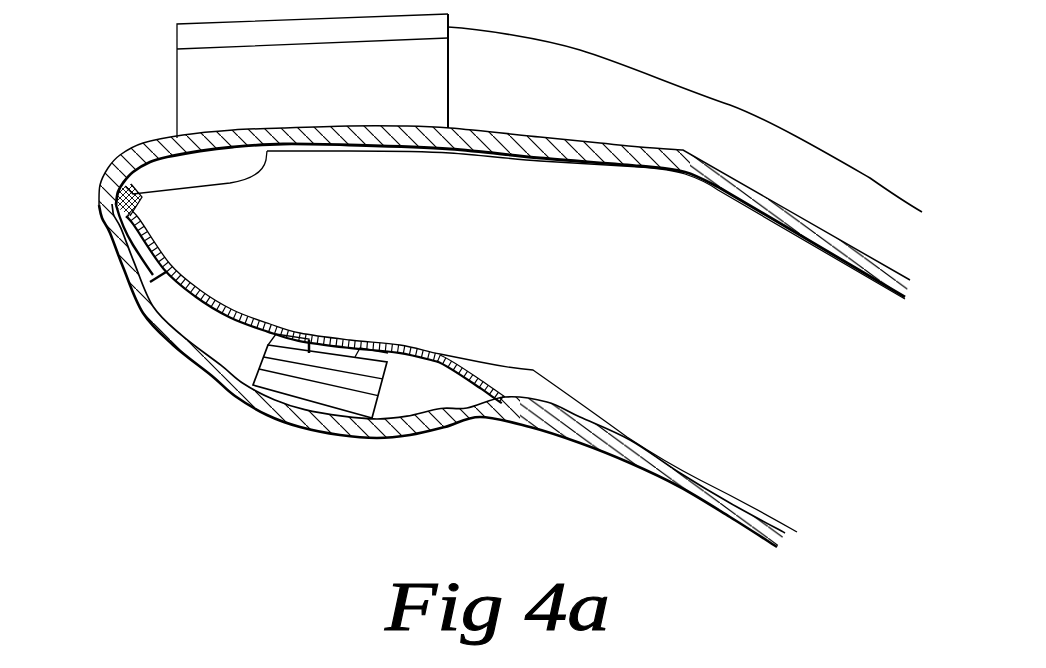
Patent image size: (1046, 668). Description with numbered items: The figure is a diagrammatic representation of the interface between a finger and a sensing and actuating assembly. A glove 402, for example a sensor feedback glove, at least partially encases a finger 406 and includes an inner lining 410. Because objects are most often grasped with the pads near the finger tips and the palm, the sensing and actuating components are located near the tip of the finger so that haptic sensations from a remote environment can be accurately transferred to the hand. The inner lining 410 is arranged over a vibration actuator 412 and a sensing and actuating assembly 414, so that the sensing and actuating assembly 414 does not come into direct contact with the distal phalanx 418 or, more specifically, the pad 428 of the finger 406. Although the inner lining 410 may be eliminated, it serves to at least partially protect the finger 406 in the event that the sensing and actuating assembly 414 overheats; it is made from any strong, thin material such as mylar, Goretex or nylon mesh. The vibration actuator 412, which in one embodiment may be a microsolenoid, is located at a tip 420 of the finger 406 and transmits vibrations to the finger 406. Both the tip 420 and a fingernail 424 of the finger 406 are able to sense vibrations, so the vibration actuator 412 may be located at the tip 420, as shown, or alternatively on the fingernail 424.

The glove 402 is at (100, 210).
The finger 406 is at (703, 318).
The inner lining 410 is at (468, 390).
The vibration actuator 412 is at (145, 263).
The sensing and actuating assembly 414 is at (303, 377).
The distal phalanx 418 is at (467, 182).
The tip 420 is at (117, 202).
The fingernail 424 is at (173, 178).
The pad 428 is at (367, 327).